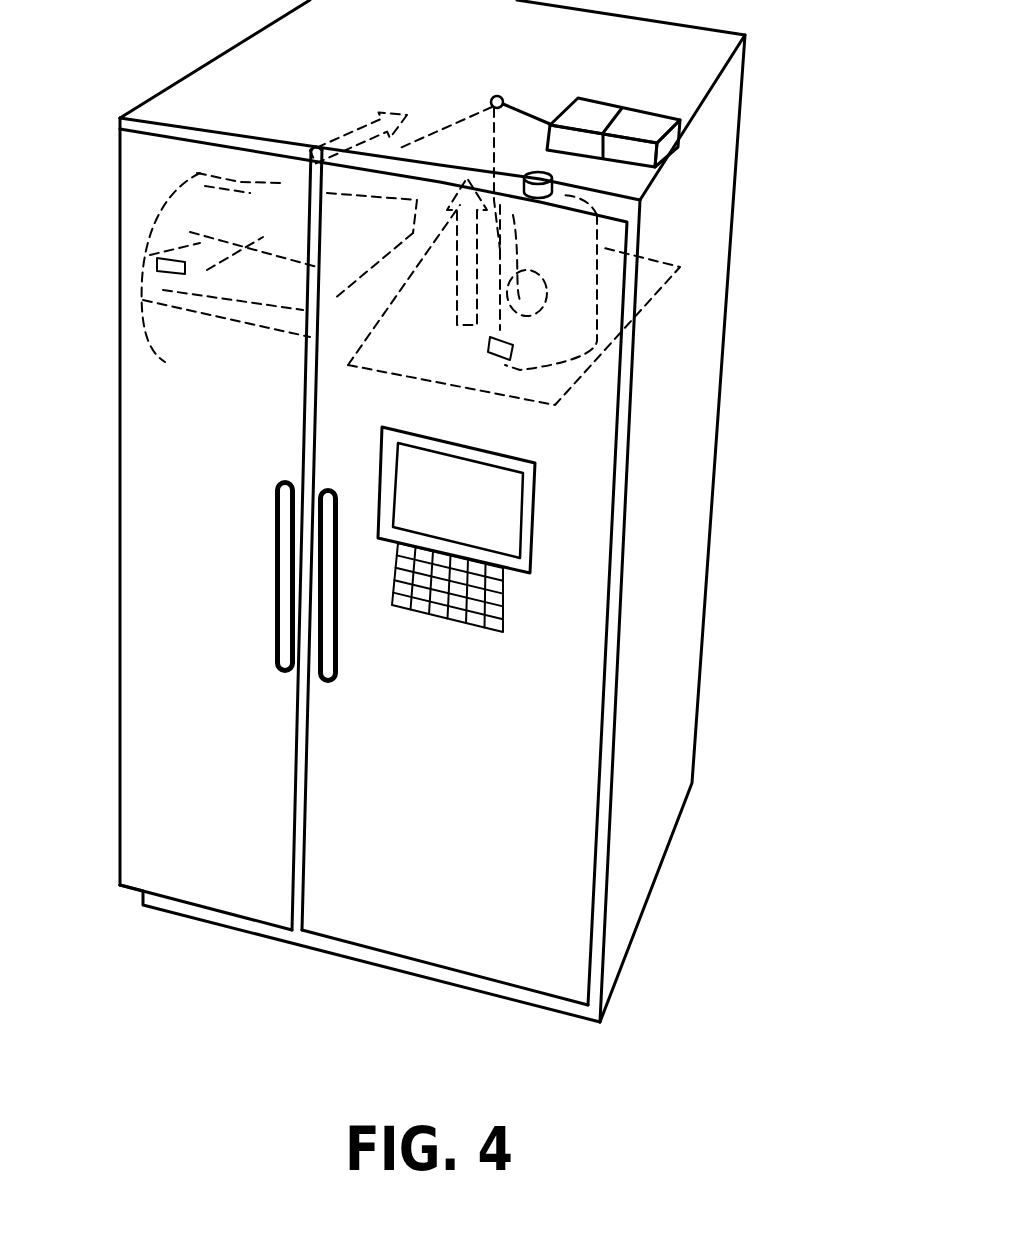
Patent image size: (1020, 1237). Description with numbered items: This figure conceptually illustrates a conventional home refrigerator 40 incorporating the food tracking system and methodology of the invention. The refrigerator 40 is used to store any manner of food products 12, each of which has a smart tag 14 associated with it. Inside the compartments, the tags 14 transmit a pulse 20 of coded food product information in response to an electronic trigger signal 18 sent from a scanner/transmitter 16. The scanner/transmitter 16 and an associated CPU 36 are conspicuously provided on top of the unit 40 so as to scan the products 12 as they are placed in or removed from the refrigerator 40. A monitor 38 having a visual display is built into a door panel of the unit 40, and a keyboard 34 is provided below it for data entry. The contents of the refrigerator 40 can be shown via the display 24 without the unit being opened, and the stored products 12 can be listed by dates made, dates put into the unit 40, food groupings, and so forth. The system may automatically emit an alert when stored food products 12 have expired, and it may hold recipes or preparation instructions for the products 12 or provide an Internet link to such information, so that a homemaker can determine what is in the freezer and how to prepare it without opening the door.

The food products 12 is at (172, 222).
The smart tag 14 is at (142, 340).
The scanner/transmitter 16 is at (590, 105).
The trigger signal 18 is at (442, 120).
The pulse 20 is at (283, 130).
The display 24 is at (530, 533).
The keyboard 34 is at (450, 622).
The CPU 36 is at (662, 108).
The monitor 38 is at (535, 523).
The refrigerator 40 is at (585, 777).